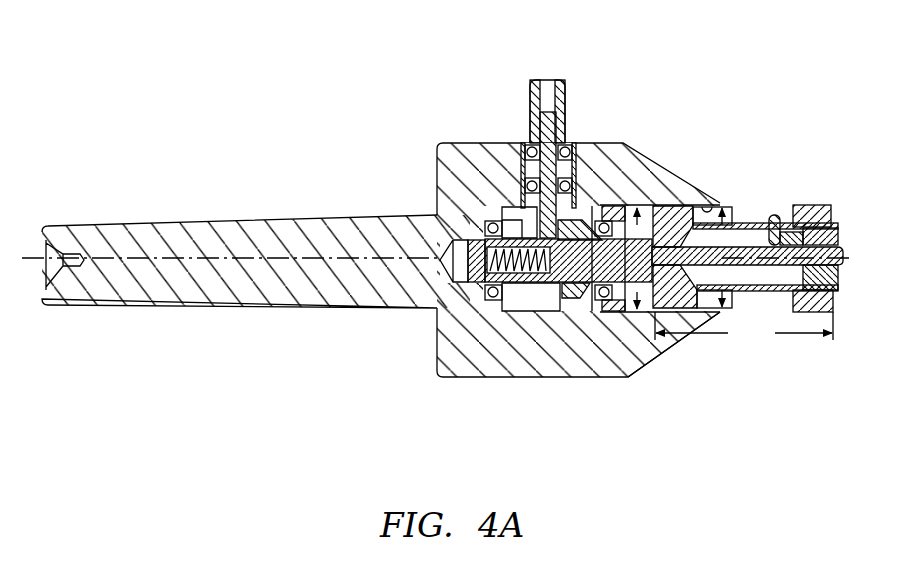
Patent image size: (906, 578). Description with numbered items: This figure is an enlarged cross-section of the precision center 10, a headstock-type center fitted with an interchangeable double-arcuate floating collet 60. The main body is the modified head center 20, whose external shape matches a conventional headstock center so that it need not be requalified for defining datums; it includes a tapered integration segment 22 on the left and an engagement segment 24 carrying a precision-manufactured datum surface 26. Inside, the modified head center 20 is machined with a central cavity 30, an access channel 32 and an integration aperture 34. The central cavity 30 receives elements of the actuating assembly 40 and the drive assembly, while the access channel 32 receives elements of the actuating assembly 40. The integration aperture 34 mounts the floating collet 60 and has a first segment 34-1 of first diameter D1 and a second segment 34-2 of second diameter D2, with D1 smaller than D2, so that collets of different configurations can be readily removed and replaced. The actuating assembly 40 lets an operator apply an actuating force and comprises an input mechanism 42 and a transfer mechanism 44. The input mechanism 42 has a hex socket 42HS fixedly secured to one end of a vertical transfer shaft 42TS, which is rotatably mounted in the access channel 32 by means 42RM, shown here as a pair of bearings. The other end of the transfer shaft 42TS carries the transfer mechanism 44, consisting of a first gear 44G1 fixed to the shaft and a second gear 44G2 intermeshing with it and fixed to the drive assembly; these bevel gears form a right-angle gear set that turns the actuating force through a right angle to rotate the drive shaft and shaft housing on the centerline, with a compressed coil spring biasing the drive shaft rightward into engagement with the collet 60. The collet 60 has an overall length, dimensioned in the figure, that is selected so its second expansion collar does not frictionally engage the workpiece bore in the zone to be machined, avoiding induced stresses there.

The precision center 10 is at (375, 88).
The modified head center 20 is at (372, 142).
The integration segment 22 is at (192, 215).
The engagement segment 24 is at (552, 408).
The datum surface 26 is at (676, 356).
The central cavity 30 is at (600, 302).
The access channel 32 is at (500, 214).
The integration aperture 34 is at (777, 162).
The first segment 34-1 is at (712, 205).
The second segment 34-2 is at (654, 205).
The actuating assembly 40 is at (592, 100).
The input mechanism 42 is at (498, 24).
The hex socket 42HS is at (532, 98).
The transfer shaft 42TS is at (546, 130).
The means for rotatably mounting the transfer shaft 42RM is at (522, 160).
The transfer mechanism 44 is at (527, 428).
The first gear 44G1 is at (475, 284).
The second gear 44G2 is at (562, 292).
The interchangeable double-arcuate floating collet 60 is at (744, 285).
The first diameter D1 is at (730, 215).
The second diameter D2 is at (640, 312).